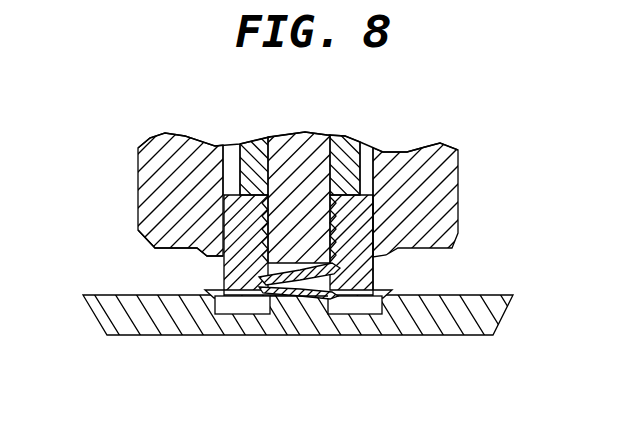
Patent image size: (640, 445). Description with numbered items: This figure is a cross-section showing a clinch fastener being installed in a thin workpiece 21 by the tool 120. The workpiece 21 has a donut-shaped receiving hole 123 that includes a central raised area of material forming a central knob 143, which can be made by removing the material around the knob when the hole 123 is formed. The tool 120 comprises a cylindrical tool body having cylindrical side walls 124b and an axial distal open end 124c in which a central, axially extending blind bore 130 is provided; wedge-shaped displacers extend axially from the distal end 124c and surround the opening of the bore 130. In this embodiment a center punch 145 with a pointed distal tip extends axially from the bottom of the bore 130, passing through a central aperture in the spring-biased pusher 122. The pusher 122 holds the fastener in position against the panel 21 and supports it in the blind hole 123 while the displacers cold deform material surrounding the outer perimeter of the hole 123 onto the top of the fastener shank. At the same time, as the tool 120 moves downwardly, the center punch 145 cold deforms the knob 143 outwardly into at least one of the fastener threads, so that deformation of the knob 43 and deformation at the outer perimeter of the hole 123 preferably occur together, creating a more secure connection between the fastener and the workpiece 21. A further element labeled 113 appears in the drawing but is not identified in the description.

The workpiece 21 is at (187, 337).
The knob 43 is at (300, 303).
The nut side wall 113 is at (378, 275).
The tool 120 is at (460, 181).
The spring-biased pusher 122 is at (347, 142).
The receiving hole 123 is at (237, 307).
The cylindrical side walls 124b is at (138, 168).
The axial distal open end 124c is at (160, 253).
The blind bore 130 is at (370, 170).
The central knob 143 is at (278, 298).
The center punch 145 is at (305, 142).